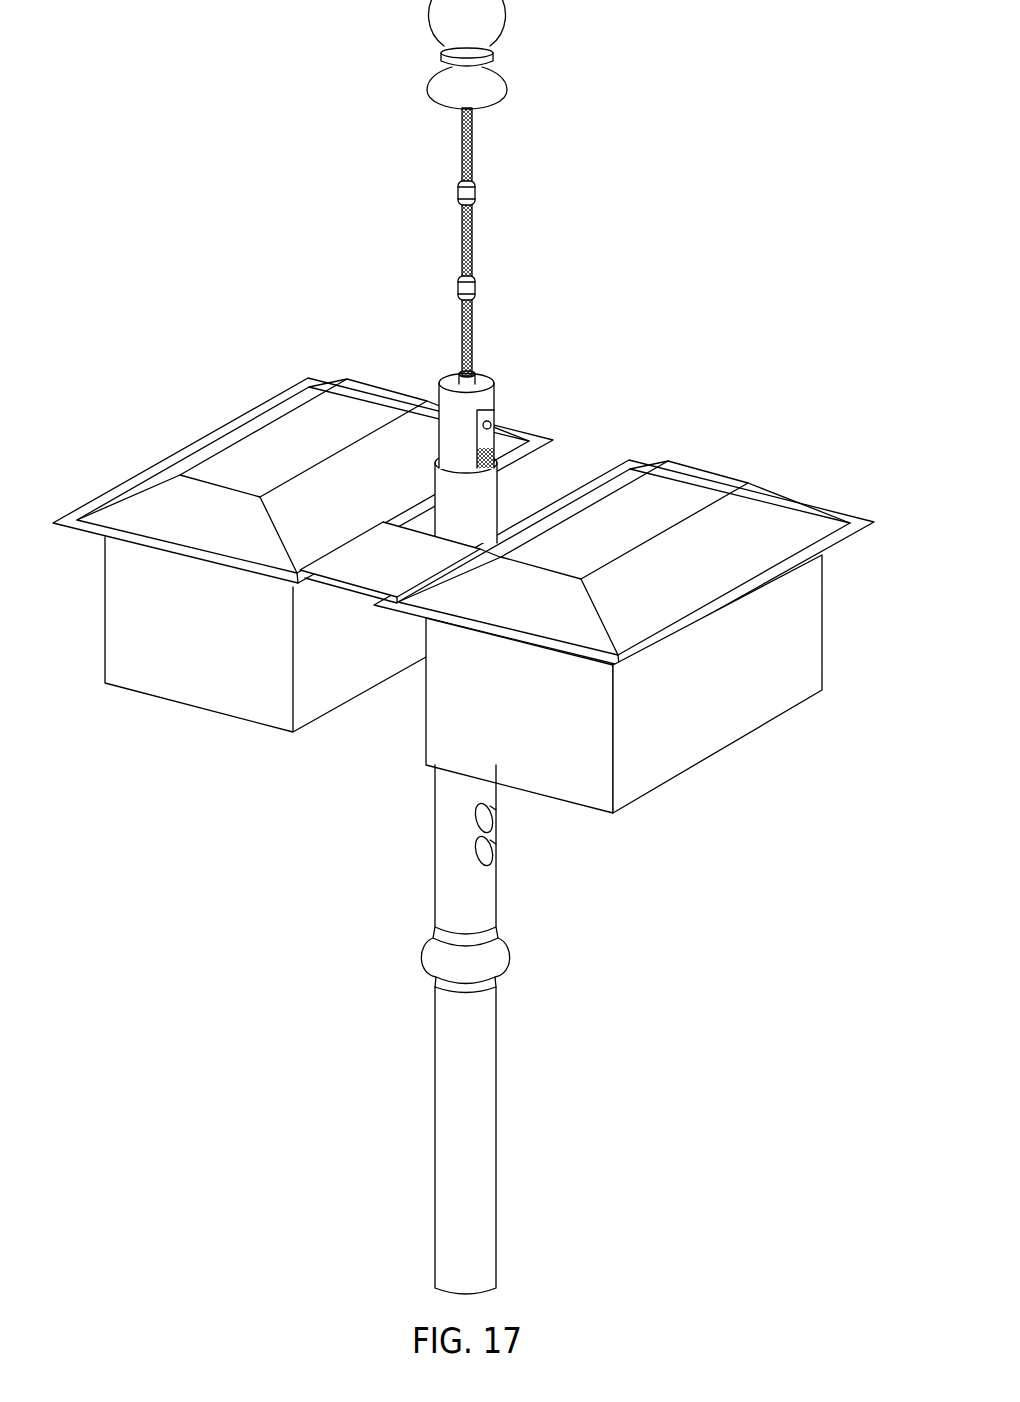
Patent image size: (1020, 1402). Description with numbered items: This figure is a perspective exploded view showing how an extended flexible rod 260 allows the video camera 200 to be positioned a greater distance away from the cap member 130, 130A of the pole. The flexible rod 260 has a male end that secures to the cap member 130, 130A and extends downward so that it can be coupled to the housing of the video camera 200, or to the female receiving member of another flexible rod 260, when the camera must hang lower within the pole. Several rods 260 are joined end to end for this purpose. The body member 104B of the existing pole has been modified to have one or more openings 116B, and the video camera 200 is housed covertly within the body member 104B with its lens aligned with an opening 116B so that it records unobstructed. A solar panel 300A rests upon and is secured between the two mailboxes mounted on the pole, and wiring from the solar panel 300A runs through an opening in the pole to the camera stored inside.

The cap member 130 is at (576, 54).
The cap member 130A is at (540, 60).
The flexible rod 260 is at (510, 240).
The video camera 200 is at (498, 397).
The solar panel 300A is at (388, 583).
The openings 116B is at (495, 813).
The body member 104B is at (458, 1055).